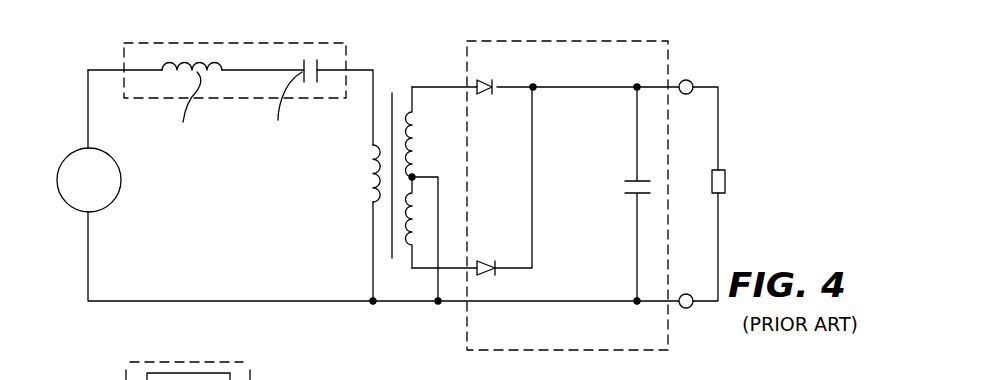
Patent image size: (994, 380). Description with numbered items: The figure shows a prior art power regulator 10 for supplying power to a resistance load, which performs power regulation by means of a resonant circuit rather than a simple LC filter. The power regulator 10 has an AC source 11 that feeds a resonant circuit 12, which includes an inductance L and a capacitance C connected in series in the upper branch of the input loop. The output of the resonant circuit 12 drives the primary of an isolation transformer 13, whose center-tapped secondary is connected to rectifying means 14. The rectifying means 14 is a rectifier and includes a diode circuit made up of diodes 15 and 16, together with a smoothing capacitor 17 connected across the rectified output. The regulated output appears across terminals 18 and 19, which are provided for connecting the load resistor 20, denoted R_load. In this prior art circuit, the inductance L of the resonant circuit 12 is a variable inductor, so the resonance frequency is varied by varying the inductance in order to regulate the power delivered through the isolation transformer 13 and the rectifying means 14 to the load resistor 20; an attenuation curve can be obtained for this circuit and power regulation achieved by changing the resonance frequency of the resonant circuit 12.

The power regulator 10 is at (96, 31).
The AC source 11 is at (107, 207).
The resonant circuit 12 is at (266, 40).
The isolation transformer 13 is at (392, 83).
The rectifying means 14 is at (570, 183).
The diode 15 is at (492, 82).
The diode 16 is at (484, 262).
The smoothing capacitor 17 is at (630, 182).
The terminal 18 is at (693, 84).
The terminal 19 is at (688, 308).
The load resistor 20 is at (727, 172).